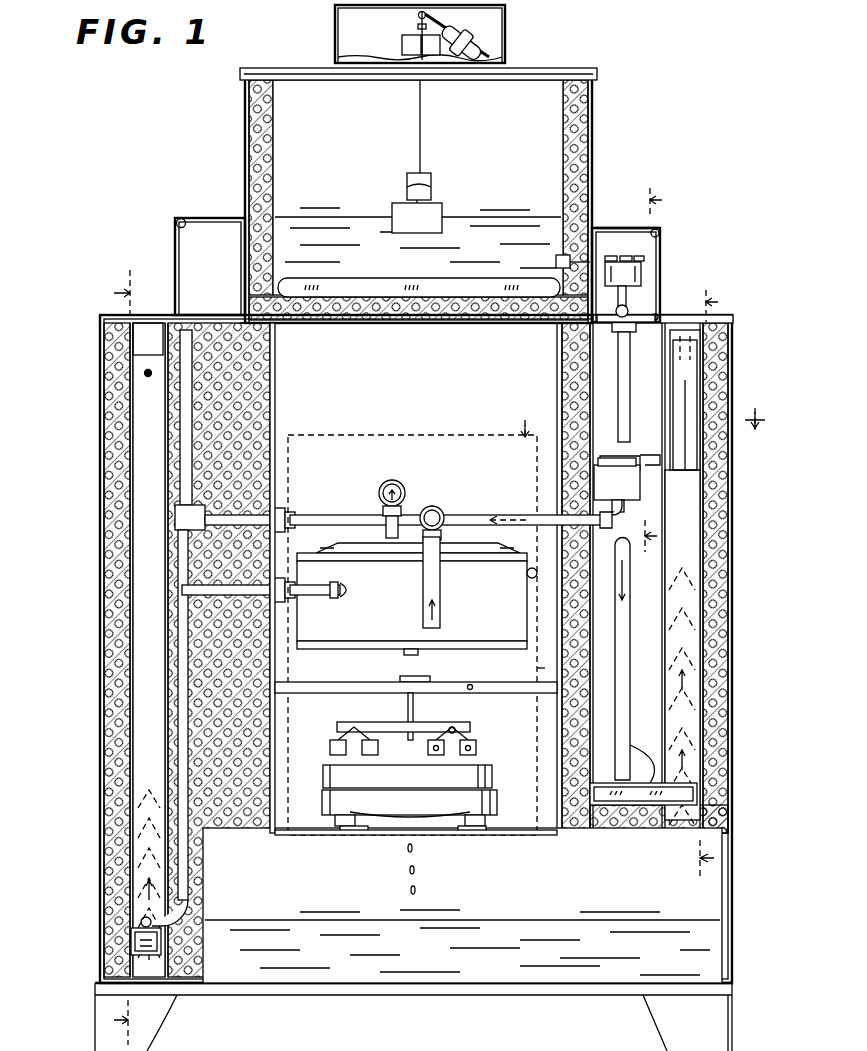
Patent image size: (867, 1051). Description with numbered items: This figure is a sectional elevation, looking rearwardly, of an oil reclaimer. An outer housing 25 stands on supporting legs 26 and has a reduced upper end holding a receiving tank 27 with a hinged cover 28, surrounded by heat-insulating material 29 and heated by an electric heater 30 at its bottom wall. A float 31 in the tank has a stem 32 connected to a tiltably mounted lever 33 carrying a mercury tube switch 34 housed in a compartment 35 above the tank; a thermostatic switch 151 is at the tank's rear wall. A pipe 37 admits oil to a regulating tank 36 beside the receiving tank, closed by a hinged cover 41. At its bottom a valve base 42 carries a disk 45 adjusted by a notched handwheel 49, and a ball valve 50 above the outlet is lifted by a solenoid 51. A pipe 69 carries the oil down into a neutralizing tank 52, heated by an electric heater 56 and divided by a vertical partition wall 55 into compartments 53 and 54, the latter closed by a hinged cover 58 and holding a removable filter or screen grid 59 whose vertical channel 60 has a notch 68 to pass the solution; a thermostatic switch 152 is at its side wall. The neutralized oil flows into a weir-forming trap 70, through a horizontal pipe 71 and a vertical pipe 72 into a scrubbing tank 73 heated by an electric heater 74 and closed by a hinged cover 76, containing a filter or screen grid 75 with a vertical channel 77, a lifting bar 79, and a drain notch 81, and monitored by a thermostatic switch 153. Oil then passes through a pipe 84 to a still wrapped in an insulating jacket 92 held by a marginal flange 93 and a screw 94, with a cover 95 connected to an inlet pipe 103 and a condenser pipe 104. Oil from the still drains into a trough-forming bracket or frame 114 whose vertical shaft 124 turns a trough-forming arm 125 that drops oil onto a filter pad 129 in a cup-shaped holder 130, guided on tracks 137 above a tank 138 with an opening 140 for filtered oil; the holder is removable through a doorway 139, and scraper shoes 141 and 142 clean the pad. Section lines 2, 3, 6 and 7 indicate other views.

The section line 2- 2 is at (650, 373).
The section line 3- 3 is at (639, 423).
The section line 6- 6 is at (705, 587).
The section line 7- 7 is at (124, 652).
The outer housing 25 is at (100, 631).
The supporting legs 26 is at (100, 1021).
The receiving tank 27 is at (273, 133).
The hinged cover 28 is at (303, 72).
The heat-insulating material 29 is at (258, 149).
The electric heater 30 is at (388, 285).
The float 31 is at (432, 210).
The stem 32 is at (423, 128).
The tiltably mounted lever 33 is at (419, 18).
The mercury tube switch 34 is at (492, 38).
The compartment 35 is at (504, 47).
The regulating tank 36 is at (659, 254).
The pipe 37 is at (552, 258).
The hinged cover 41 is at (626, 228).
The valve base 42 is at (632, 338).
The disk 45 is at (625, 304).
The notched handwheel 49 is at (624, 249).
The ball valve 50 is at (630, 306).
The solenoid 51 is at (642, 268).
The neutralizing tank 52 is at (705, 558).
The compartment 53 is at (640, 392).
The compartment 54 is at (688, 400).
The vertical partition wall 55 is at (660, 452).
The electric heater 56 is at (632, 815).
The hinged cover 58 is at (705, 321).
The filter or screen grid 59 is at (685, 602).
The vertical channel 60 is at (690, 504).
The notch 68 is at (680, 787).
The pipe 69 is at (625, 654).
The weir-forming trap 70 is at (618, 460).
The horizontal pipe 71 is at (482, 518).
The vertical pipe 72 is at (274, 716).
The scrubbing tank 73 is at (116, 877).
The electric heater 74 is at (131, 941).
The filter or screen grid 75 is at (140, 690).
The hinged cover 76 is at (148, 312).
The vertical channel 77 is at (175, 502).
The lifting bar 79 is at (145, 373).
The notch 81 is at (140, 916).
The pipe 84 is at (310, 596).
The insulating jacket 92 is at (356, 630).
The marginal flange 93 is at (309, 555).
The screw 94 is at (420, 656).
The cover 95 is at (488, 550).
The inlet pipe 103 is at (432, 592).
The pipe 104 is at (384, 500).
The trough-forming bracket or frame 114 is at (492, 690).
The vertical shaft 124 is at (408, 704).
The trough-forming arm 125 is at (432, 722).
The filter pad 129 is at (330, 778).
The cup-shaped holder 130 is at (330, 805).
The tracks 137 is at (484, 828).
The tank 138 is at (505, 836).
The doorway 139 is at (308, 435).
The opening 140 is at (408, 845).
The scraper shoe 141 is at (478, 750).
The scraper shoe 142 is at (378, 750).
The thermostatic switch 151 is at (412, 170).
The thermostatic switch 152 is at (537, 668).
The thermostatic switch 153 is at (160, 805).